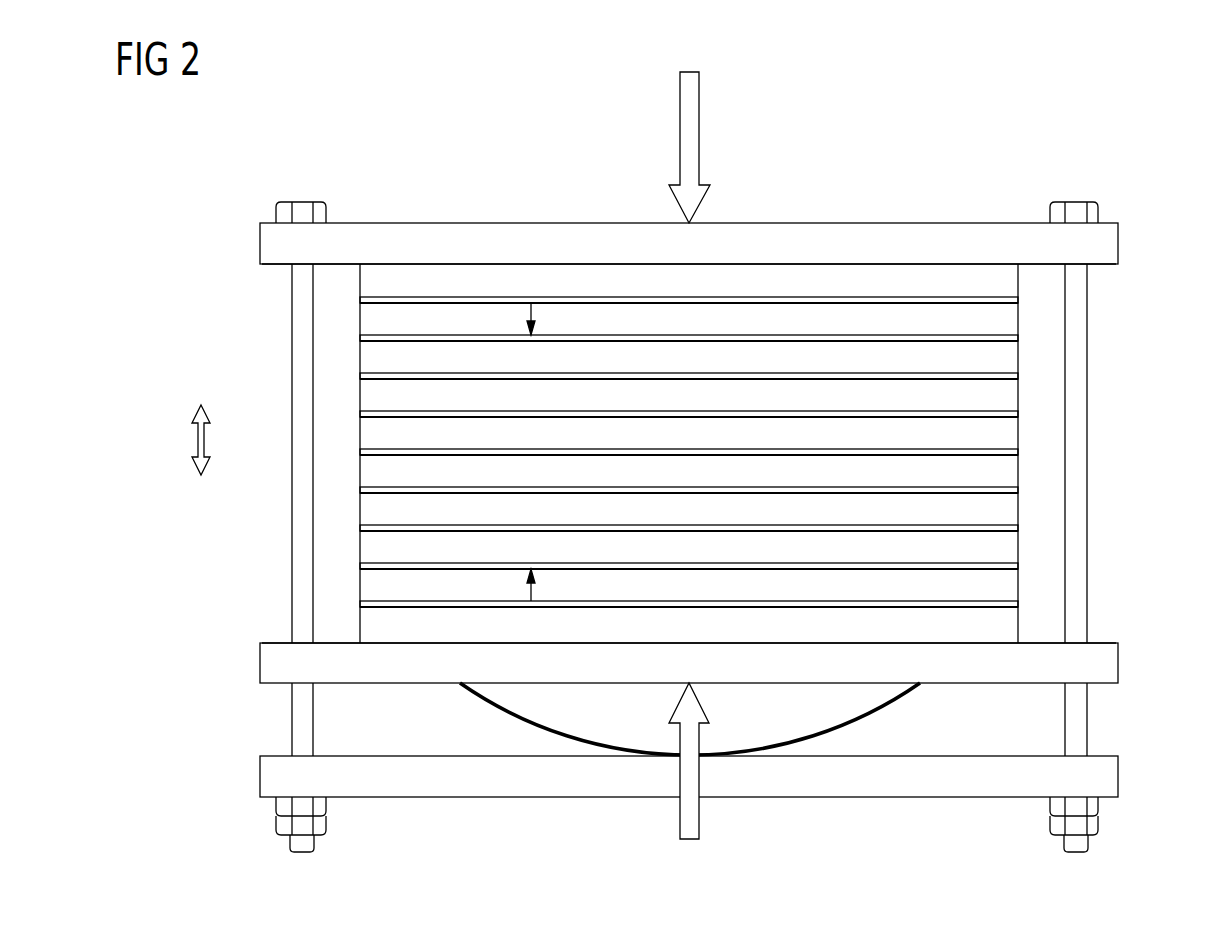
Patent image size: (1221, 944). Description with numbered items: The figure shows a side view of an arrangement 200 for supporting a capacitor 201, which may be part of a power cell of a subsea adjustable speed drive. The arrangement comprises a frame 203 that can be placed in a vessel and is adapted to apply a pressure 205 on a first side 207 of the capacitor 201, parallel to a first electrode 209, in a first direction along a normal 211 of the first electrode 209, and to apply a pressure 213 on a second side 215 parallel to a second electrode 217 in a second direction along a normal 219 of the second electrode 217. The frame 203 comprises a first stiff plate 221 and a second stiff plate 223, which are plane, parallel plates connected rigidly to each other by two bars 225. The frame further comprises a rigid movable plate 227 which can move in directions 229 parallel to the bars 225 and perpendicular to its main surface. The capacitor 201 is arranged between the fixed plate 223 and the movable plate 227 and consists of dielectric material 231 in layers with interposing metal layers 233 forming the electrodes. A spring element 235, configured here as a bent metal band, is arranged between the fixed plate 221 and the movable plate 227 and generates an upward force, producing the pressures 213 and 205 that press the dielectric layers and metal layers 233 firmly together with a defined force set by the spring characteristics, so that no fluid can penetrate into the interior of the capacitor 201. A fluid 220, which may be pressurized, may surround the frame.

The arrangement 200 is at (1074, 114).
The capacitor 201 is at (1057, 342).
The frame 203 is at (238, 188).
The pressure 205 is at (692, 127).
The first side 207 is at (940, 264).
The first electrode 209 is at (360, 300).
The normal 211 is at (536, 315).
The pressure 213 is at (692, 817).
The second side 215 is at (419, 645).
The second electrode 217 is at (360, 602).
The normal 219 is at (536, 555).
The fluid 220 is at (182, 538).
The first stiff plate 221 is at (270, 775).
The second stiff plate 223 is at (270, 244).
The bars 225 is at (300, 521).
The movable plate 227 is at (270, 662).
The directions 229 is at (196, 440).
The dielectric material 231 is at (1005, 284).
The metal layers 233 is at (360, 338).
The spring element 235 is at (853, 727).